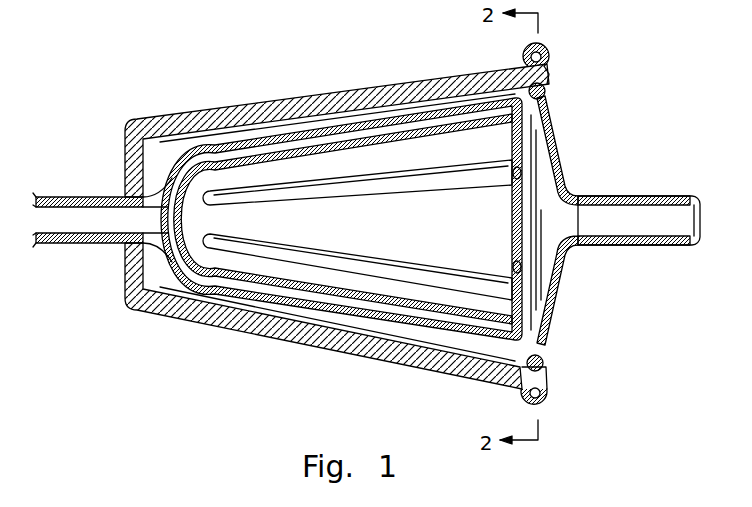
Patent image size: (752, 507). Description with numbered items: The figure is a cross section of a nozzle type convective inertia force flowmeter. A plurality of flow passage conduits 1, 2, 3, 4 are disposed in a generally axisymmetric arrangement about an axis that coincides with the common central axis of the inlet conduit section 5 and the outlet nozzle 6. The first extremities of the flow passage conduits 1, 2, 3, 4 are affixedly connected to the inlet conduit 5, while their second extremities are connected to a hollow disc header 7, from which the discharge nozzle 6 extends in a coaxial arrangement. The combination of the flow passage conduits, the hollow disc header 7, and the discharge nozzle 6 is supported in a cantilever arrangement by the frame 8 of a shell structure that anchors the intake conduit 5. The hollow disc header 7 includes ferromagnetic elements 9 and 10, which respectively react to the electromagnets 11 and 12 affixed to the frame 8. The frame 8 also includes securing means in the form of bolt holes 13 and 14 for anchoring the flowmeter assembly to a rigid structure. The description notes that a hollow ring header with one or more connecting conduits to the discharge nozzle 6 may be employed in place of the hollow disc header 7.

The flow passage conduit 1 is at (343, 143).
The flow passage conduit 2 is at (400, 180).
The flow passage conduit 3 is at (377, 255).
The flow passage conduit 4 is at (323, 298).
The inlet conduit section 5 is at (80, 220).
The outlet nozzle 6 is at (657, 220).
The hollow disc header 7 is at (563, 152).
The frame 8 is at (270, 113).
The ferromagnetic element 9 is at (550, 88).
The ferromagnetic element 10 is at (547, 353).
The electromagnet 11 is at (522, 63).
The electromagnet 12 is at (548, 363).
The bolt hole 13 is at (547, 56).
The bolt hole 14 is at (548, 397).